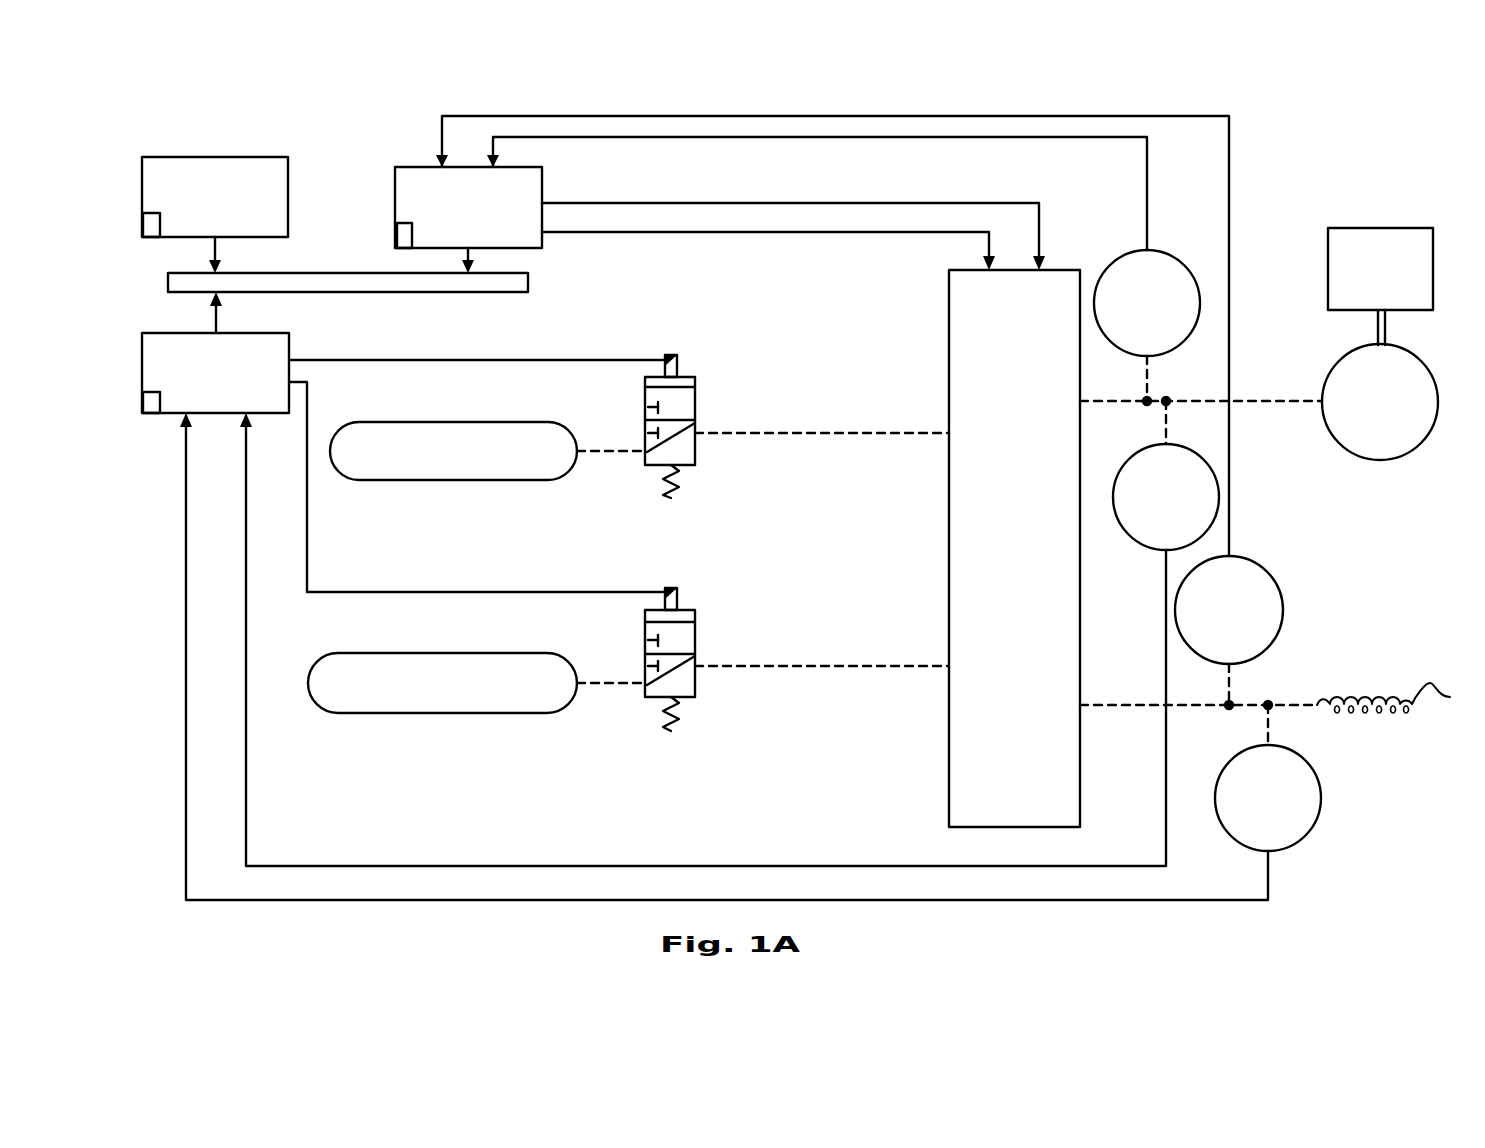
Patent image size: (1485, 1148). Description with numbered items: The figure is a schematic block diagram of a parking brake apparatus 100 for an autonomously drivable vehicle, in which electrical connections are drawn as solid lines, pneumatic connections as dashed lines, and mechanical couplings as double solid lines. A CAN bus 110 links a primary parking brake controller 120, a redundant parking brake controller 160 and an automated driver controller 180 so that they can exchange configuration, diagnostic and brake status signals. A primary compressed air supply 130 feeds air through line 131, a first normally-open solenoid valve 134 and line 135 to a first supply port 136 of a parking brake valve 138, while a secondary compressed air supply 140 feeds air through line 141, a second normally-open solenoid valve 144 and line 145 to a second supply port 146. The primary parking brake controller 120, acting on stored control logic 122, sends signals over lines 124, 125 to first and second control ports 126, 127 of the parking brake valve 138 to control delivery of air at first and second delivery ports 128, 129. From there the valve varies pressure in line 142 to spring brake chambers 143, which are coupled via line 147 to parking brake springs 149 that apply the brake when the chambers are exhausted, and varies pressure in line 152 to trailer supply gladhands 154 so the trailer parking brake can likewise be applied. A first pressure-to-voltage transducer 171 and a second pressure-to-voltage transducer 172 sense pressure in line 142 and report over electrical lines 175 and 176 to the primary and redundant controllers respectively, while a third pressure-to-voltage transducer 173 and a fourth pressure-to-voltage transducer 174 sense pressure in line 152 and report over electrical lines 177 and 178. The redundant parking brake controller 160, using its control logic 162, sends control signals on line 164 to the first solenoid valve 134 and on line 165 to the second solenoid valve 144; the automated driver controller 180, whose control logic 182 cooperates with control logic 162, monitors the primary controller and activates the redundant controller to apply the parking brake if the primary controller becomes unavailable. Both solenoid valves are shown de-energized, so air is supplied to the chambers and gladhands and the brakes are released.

The parking brake apparatus 100 is at (322, 116).
The CAN bus 110 is at (528, 283).
The primary parking brake controller 120 is at (415, 165).
The control logic 122 is at (397, 232).
The line 124 is at (755, 200).
The line 125 is at (745, 235).
The first control port 126 is at (1042, 268).
The second control port 127 is at (985, 268).
The first delivery port 128 is at (1082, 398).
The second delivery port 129 is at (1082, 703).
The primary compressed air supply 130 is at (455, 420).
The line 131 is at (610, 445).
The first 3/2 normally-open solenoid valve 134 is at (688, 375).
The line 135 is at (805, 430).
The first supply port 136 is at (946, 430).
The parking brake valve 138 is at (948, 320).
The secondary compressed air supply 140 is at (440, 715).
The line 141 is at (603, 680).
The line 142 is at (1257, 405).
The spring brake chambers 143 is at (1320, 385).
The second 3/2 normally-open solenoid valve 144 is at (688, 607).
The line 145 is at (822, 663).
The second supply port 146 is at (946, 665).
The line 147 is at (1385, 325).
The parking brake springs 149 is at (1365, 228).
The line 152 is at (1283, 700).
The trailer supply gladhands 154 is at (1362, 695).
The redundant parking brake controller 160 is at (289, 343).
The control logic 162 is at (150, 415).
The line 164 is at (455, 358).
The line 165 is at (485, 590).
The first pressure-to-voltage transducer 171 is at (1178, 252).
The second pressure-to-voltage transducer 172 is at (1135, 453).
The third pressure-to-voltage transducer 173 is at (1265, 570).
The fourth pressure-to-voltage transducer 174 is at (1232, 755).
The electrical line 175 is at (1147, 181).
The electrical line 176 is at (1165, 575).
The electrical line 177 is at (1230, 483).
The electrical line 178 is at (1270, 858).
The automated driver controller 180 is at (288, 175).
The control logic 182 is at (148, 238).